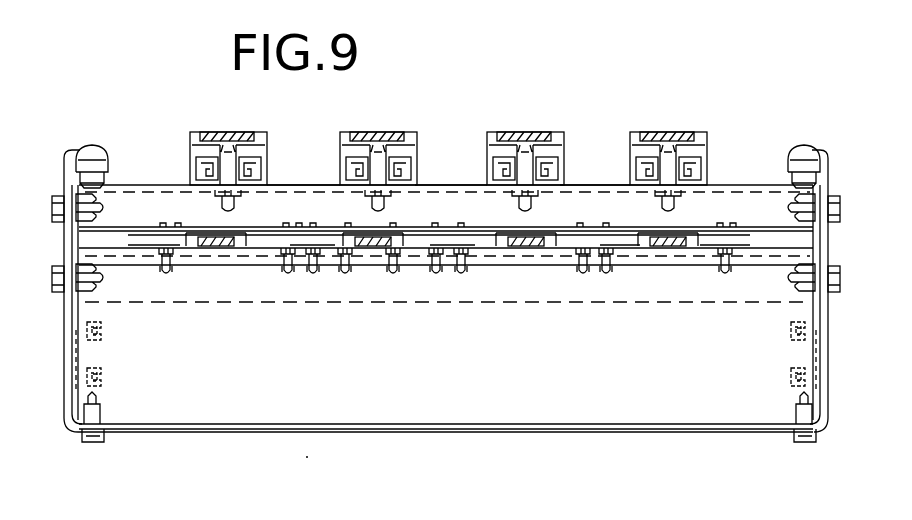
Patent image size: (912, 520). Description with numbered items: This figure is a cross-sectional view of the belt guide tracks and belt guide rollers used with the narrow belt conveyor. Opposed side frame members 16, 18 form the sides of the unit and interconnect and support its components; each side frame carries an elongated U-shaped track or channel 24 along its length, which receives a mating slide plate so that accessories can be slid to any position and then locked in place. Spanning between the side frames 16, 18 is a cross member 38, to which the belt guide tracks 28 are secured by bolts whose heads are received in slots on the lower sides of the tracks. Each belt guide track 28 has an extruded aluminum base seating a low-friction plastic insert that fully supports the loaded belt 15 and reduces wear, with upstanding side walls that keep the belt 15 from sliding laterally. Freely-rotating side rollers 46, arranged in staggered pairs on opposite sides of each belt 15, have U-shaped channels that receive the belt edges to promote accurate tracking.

The belt 15 is at (240, 131).
The side frame member 16 is at (64, 352).
The side frame member 18 is at (828, 352).
The U-shaped track or channel 24 is at (94, 342).
The belt guide track 28 is at (620, 155).
The cross member 38 is at (767, 205).
The side roller 46 is at (170, 278).